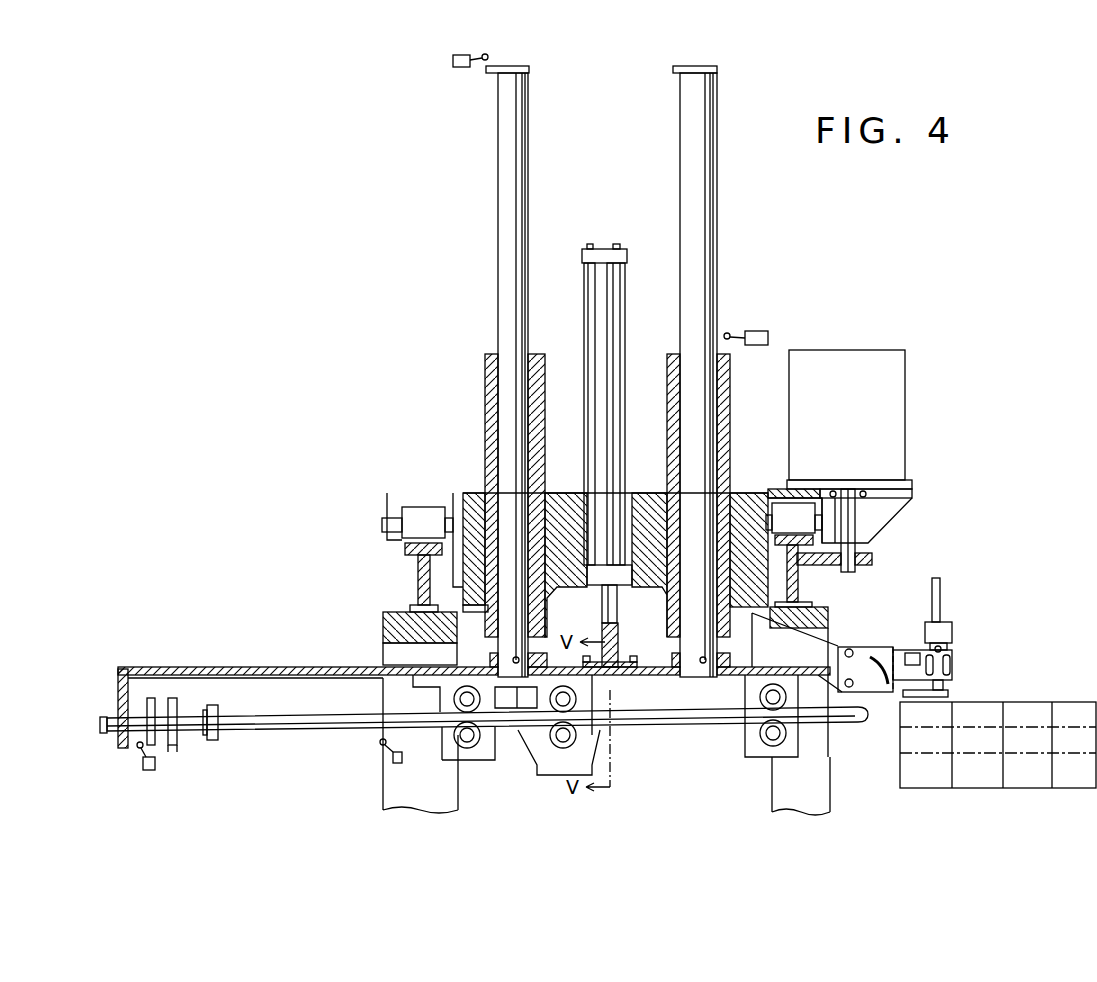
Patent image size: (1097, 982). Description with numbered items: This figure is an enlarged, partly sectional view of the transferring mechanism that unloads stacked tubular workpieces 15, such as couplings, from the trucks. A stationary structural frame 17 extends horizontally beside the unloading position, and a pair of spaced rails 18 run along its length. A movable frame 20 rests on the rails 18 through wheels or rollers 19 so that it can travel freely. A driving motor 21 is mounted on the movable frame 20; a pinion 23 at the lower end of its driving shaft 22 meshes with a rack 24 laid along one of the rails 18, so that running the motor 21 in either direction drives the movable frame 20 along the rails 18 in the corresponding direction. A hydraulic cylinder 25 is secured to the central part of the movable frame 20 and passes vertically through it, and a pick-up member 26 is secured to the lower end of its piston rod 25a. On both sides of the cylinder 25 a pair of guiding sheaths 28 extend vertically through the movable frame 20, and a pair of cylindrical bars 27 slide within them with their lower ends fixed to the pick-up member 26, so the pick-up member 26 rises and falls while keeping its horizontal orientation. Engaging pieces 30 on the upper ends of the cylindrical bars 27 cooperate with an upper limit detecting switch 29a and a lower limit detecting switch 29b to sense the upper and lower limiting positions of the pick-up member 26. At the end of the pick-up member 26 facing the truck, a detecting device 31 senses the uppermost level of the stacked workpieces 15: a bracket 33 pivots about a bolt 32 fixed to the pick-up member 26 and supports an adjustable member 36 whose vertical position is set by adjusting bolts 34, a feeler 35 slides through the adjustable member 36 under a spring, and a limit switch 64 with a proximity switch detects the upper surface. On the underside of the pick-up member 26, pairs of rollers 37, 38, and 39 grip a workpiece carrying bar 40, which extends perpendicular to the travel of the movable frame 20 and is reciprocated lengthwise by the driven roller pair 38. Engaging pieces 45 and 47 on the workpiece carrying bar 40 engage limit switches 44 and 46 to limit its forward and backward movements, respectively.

The tubular workpiece 15 is at (1016, 716).
The structural frame 17 is at (383, 626).
The rail 18 is at (418, 573).
The roller 19 is at (414, 507).
The movable frame 20 is at (476, 493).
The driving motor 21 is at (905, 407).
The driving shaft 22 is at (868, 527).
The pinion 23 is at (872, 558).
The rack 24 is at (820, 566).
The hydraulic cylinder 25 is at (607, 288).
The piston rod 25a is at (617, 613).
The pick-up member 26 is at (641, 675).
The cylindrical bar 27 is at (497, 153).
The guiding sheath 28 is at (490, 383).
The upper limit detecting switch 29a is at (453, 65).
The lower limit detecting switch 29b is at (757, 331).
The engaging piece 30 is at (527, 73).
The detecting device 31 is at (952, 643).
The bolt 32 is at (853, 688).
The bracket 33 is at (872, 648).
The adjusting bolt 34 is at (952, 661).
The feeler 35 is at (948, 694).
The adjustable member 36 is at (946, 614).
The pair of rollers 37 is at (456, 742).
The pair of rollers 38 is at (557, 755).
The pair of rollers 39 is at (765, 745).
The workpiece carrying bar 40 is at (633, 730).
The limit switch 44 is at (393, 758).
The engaging piece 45 is at (175, 745).
The limit switch 46 is at (150, 770).
The engaging piece 47 is at (150, 698).
The limit switch 64 is at (935, 649).